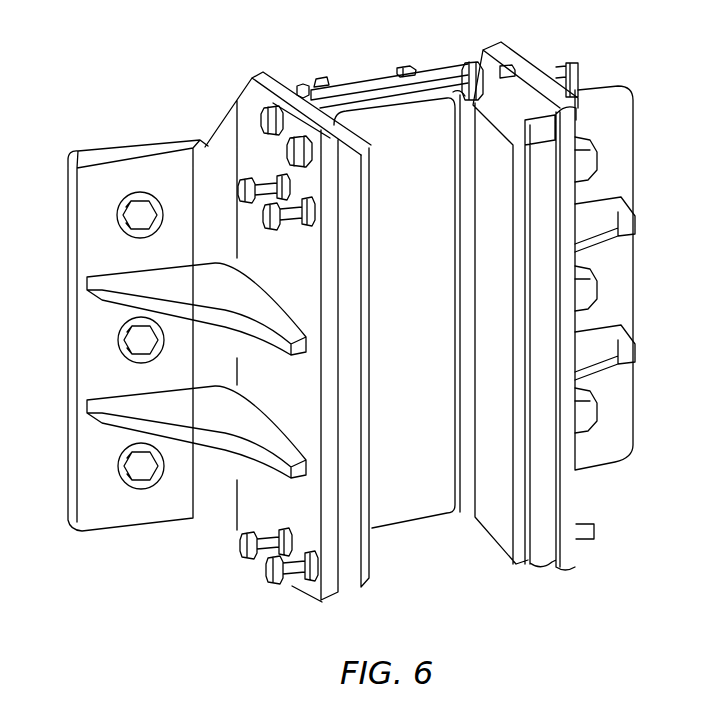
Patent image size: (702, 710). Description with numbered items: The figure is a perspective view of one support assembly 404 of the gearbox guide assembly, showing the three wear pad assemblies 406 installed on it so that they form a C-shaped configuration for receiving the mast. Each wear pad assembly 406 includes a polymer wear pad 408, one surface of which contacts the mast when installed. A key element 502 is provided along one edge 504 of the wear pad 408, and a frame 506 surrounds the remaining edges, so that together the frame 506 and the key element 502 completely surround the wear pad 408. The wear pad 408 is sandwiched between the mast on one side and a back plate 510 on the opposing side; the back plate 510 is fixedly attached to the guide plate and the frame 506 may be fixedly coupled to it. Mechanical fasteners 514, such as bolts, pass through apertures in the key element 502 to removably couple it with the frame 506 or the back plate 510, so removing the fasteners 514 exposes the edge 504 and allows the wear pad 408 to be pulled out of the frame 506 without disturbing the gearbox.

The support assembly 404 is at (587, 52).
The wear pad assembly 406 is at (262, 66).
The wear pad 408 is at (419, 108).
The key element 502 is at (404, 66).
The edge 504 is at (366, 96).
The frame 506 is at (348, 565).
The back plate 510 is at (320, 518).
The mechanical fastener 514 is at (300, 85).